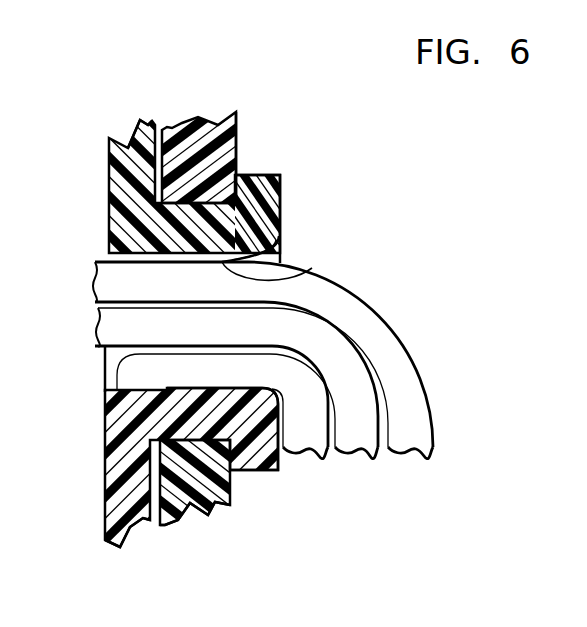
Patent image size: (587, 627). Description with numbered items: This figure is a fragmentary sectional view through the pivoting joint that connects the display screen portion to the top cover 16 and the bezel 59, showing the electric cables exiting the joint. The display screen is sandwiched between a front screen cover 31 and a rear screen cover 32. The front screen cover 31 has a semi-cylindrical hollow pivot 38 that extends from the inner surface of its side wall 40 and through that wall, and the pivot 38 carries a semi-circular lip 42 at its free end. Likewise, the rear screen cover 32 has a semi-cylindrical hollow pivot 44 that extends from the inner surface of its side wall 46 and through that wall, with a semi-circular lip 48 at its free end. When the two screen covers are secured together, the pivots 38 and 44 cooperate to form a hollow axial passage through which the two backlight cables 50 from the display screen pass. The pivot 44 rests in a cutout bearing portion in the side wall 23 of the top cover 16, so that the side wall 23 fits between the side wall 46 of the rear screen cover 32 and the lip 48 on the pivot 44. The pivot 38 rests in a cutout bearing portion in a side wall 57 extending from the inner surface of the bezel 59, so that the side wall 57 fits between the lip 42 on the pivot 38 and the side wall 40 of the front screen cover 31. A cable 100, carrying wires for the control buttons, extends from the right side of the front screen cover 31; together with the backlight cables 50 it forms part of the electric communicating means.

The top cover 16 is at (244, 146).
The side wall 23 is at (238, 127).
The front screen cover 31 is at (98, 490).
The rear screen cover 32 is at (100, 188).
The semi-cylindrical hollow pivot 38 is at (117, 372).
The side wall 40 is at (131, 522).
The semi-circular lip 42 is at (282, 468).
The semi-cylindrical hollow pivot 44 is at (278, 270).
The side wall 46 is at (150, 128).
The semi-circular lip 48 is at (281, 166).
The backlight cables 50 is at (313, 343).
The side wall 57 is at (234, 502).
The bezel 59 is at (244, 488).
The cable 100 is at (308, 433).